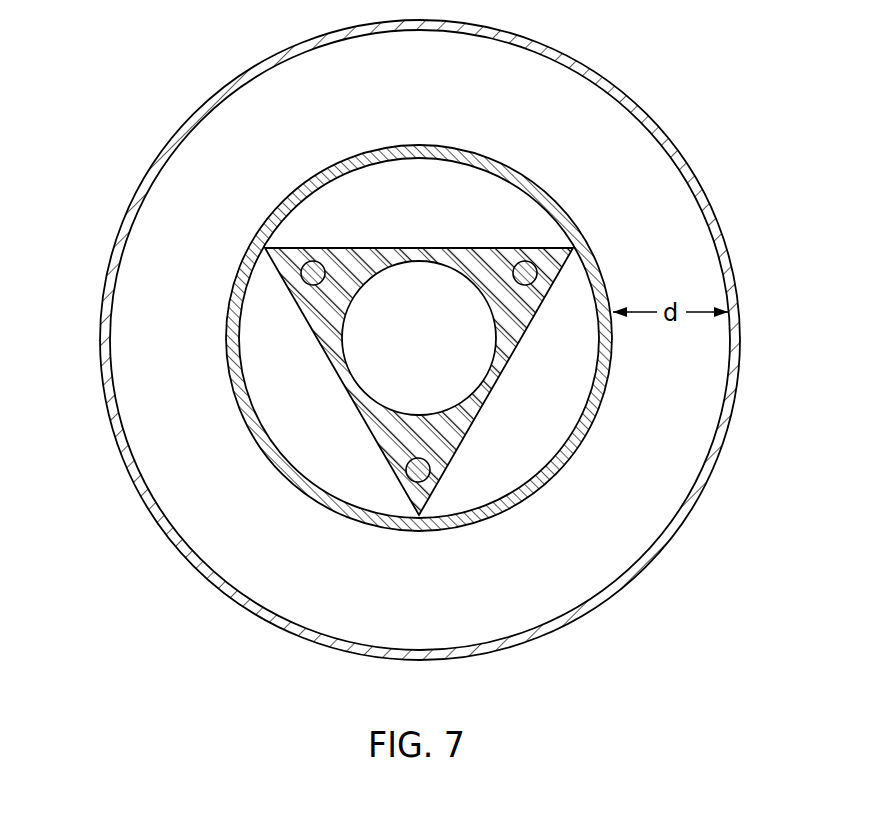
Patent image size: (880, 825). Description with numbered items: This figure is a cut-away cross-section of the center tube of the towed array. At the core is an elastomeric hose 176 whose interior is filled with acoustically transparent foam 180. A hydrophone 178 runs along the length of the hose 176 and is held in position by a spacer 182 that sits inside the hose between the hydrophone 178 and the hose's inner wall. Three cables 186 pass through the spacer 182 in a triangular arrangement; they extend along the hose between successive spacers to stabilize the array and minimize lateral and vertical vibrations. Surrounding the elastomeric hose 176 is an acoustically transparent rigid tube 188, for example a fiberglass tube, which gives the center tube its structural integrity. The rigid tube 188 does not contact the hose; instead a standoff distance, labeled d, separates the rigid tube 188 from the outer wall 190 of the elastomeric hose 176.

The elastomeric hose 176 is at (232, 383).
The hydrophone 178 is at (455, 342).
The acoustically transparent foam 180 is at (418, 178).
The spacer 182 is at (347, 263).
The cable 186 is at (300, 276).
The acoustically transparent rigid tube 188 is at (643, 568).
The outer wall 190 is at (597, 252).